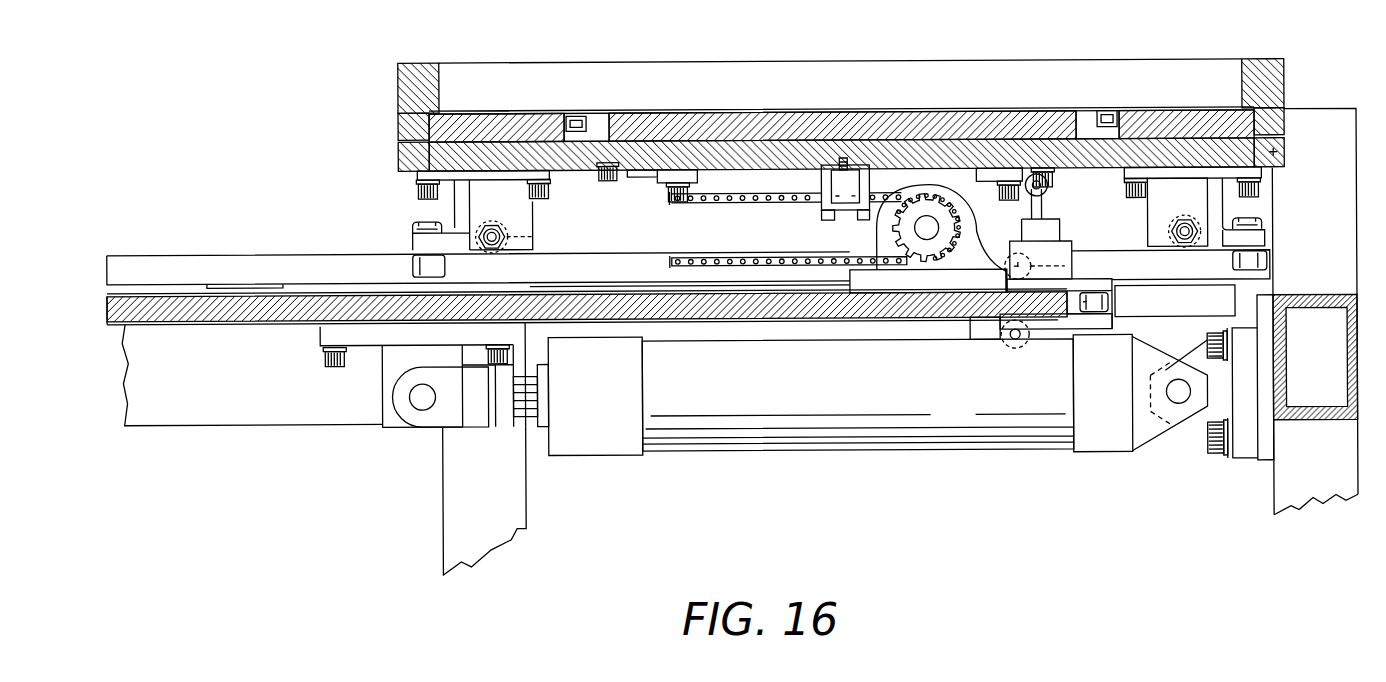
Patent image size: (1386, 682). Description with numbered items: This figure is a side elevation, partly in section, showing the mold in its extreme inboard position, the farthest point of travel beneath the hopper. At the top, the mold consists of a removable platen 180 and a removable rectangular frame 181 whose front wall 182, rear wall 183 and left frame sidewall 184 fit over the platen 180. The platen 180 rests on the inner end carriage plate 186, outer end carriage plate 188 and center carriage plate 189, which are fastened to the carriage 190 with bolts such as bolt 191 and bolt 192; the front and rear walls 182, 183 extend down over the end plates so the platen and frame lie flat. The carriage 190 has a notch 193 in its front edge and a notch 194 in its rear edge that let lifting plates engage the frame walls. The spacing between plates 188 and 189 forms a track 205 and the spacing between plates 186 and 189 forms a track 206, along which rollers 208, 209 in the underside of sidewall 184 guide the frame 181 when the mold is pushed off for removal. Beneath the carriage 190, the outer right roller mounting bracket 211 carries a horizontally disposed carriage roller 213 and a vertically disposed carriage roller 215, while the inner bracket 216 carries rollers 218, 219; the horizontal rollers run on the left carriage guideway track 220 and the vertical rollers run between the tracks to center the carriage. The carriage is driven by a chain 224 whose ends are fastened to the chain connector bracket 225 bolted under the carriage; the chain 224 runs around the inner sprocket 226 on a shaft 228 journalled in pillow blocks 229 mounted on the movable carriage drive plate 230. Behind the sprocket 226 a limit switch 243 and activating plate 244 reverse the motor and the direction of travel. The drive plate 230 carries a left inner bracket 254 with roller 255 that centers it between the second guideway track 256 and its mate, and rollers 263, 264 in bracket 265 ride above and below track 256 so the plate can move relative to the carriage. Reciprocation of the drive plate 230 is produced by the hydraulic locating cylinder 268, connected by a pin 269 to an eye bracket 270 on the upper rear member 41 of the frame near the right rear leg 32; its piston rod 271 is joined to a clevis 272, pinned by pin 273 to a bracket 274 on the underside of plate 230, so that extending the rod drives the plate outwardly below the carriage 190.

The right rear leg 32 is at (1305, 510).
The upper rear member 41 is at (1308, 420).
The platen 180 is at (815, 112).
The rectangular frame 181 is at (408, 110).
The front wall 182 is at (408, 81).
The rear wall 183 is at (1283, 64).
The left frame sidewall 184 is at (1178, 66).
The inner end carriage plate 186 is at (1250, 122).
The outer end carriage plate 188 is at (458, 119).
The center carriage plate 189 is at (750, 118).
The carriage 190 is at (900, 146).
The bolt 191 is at (1055, 182).
The bolt 192 is at (636, 186).
The notch 193 is at (408, 152).
The notch 194 is at (1278, 154).
The track 205 is at (593, 141).
The track 206 is at (1083, 133).
The roller 208 is at (588, 115).
The roller 209 is at (1115, 122).
The outer right roller mounting bracket 211 is at (523, 218).
The carriage roller 213 is at (525, 238).
The carriage roller 215 is at (446, 262).
The roller mounting bracket 216 is at (1258, 238).
The roller 218 is at (1200, 218).
The roller 219 is at (1267, 262).
The left carriage guideway track 220 is at (290, 262).
The chain 224 is at (778, 262).
The chain connector bracket 225 is at (830, 182).
The inner sprocket 226 is at (890, 226).
The shaft 228 is at (930, 240).
The pillow block 229 is at (972, 222).
The carriage drive plate 230 is at (842, 312).
The limit switch 243 is at (1048, 233).
The activating plate 244 is at (995, 180).
The left inner roller mounting bracket 254 is at (1108, 322).
The roller 255 is at (1110, 292).
The guideway track 256 is at (237, 323).
The roller 263 is at (1045, 268).
The roller 264 is at (1014, 340).
The bracket 265 is at (985, 335).
The hydraulic locating cylinder 268 is at (750, 433).
The pin 269 is at (1168, 396).
The eye bracket 270 is at (1200, 430).
The piston rod 271 is at (532, 381).
The clevis 272 is at (437, 413).
The pin 273 is at (408, 395).
The bracket 274 is at (395, 357).